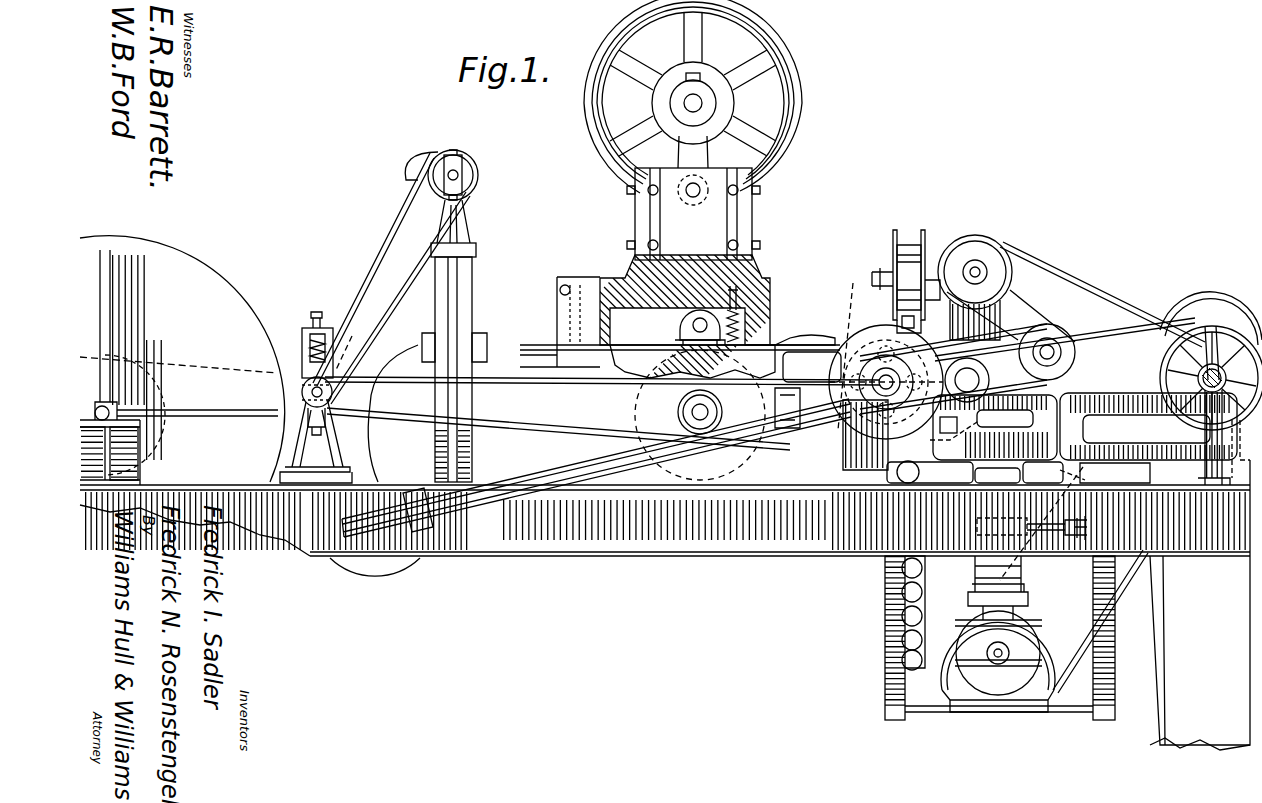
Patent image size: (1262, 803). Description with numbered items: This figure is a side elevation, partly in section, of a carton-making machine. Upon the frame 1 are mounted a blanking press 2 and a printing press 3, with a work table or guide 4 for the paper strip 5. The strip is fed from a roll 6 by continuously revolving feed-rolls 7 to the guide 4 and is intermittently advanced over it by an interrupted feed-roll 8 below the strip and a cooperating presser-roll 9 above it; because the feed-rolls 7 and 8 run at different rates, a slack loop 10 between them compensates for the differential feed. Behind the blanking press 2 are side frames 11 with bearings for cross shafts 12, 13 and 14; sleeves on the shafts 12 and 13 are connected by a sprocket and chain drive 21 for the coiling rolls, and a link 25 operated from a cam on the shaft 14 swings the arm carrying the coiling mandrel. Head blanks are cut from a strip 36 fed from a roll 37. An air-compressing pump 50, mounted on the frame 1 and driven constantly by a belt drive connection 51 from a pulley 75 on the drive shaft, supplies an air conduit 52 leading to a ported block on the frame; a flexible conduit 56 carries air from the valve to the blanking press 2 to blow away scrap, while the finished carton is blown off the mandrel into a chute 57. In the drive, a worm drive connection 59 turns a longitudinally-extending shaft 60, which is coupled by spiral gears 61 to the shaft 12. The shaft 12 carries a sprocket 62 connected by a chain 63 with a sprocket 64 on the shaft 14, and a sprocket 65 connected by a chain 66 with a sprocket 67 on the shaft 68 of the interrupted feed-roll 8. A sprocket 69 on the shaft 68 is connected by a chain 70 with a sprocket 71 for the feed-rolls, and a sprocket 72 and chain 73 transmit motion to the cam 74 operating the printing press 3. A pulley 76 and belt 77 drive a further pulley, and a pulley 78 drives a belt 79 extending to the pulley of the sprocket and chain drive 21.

The frame 1 is at (688, 560).
The blanking press 2 is at (756, 240).
The printing press 3 is at (460, 341).
The work table or guide 4 is at (820, 345).
The paper strip 5 is at (228, 365).
The roll 6 is at (248, 305).
The feed-rolls 7 is at (355, 337).
The interrupted feed-roll 8 is at (650, 545).
The presser-roll 9 is at (675, 328).
The slack loop 10 is at (375, 452).
The side frames 11 is at (1020, 330).
The cross shaft 12 is at (831, 423).
The cross shaft 13 is at (975, 262).
The cross shaft 14 is at (1080, 348).
The sprocket and chain drive 21 is at (990, 262).
The link 25 is at (1070, 280).
The strip 36 is at (885, 622).
The roll 37 is at (900, 232).
The air-compressing pump 50 is at (980, 693).
The drive connection 51 is at (1090, 648).
The air conduit 52 is at (1090, 472).
The flexible conduit 56 is at (740, 330).
The chute 57 is at (978, 378).
The worm drive connection 59 is at (1216, 480).
The longitudinally-extending shaft 60 is at (1110, 430).
The spiral gears 61 is at (858, 470).
The sprocket 62 is at (872, 365).
The chain 63 is at (1040, 335).
The sprocket 64 is at (1060, 330).
The sprocket 65 is at (852, 342).
The chain 66 is at (812, 365).
The sprocket 67 is at (678, 408).
The shaft 68 is at (558, 424).
The sprocket 69 is at (735, 465).
The chain 70 is at (528, 388).
The sprocket 71 is at (312, 372).
The sprocket 72 is at (300, 393).
The chain 73 is at (392, 240).
The cam 74 is at (410, 162).
The pulley 75 is at (1226, 330).
The pulley 76 is at (1190, 330).
The belt 77 is at (1165, 328).
The pulley 78 is at (1232, 322).
The belt 79 is at (1005, 325).